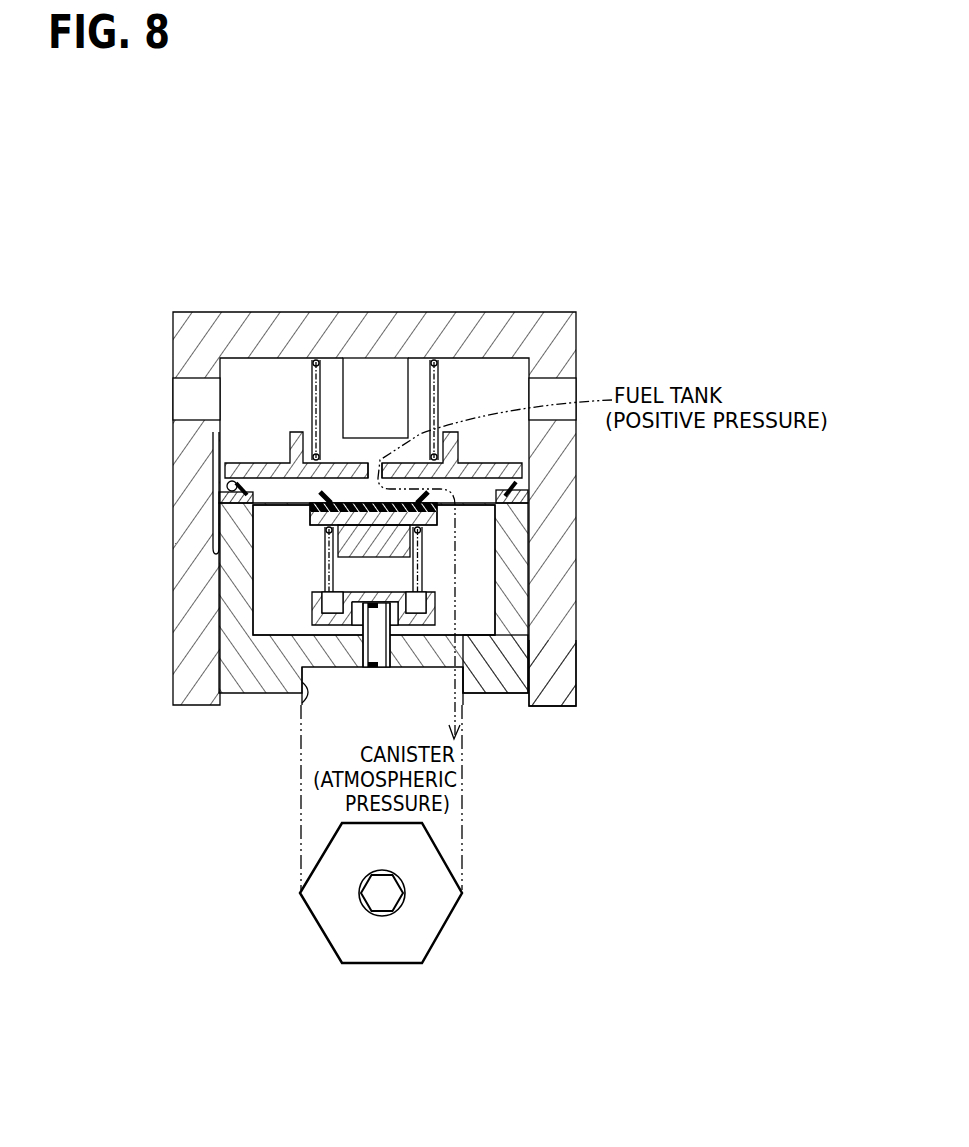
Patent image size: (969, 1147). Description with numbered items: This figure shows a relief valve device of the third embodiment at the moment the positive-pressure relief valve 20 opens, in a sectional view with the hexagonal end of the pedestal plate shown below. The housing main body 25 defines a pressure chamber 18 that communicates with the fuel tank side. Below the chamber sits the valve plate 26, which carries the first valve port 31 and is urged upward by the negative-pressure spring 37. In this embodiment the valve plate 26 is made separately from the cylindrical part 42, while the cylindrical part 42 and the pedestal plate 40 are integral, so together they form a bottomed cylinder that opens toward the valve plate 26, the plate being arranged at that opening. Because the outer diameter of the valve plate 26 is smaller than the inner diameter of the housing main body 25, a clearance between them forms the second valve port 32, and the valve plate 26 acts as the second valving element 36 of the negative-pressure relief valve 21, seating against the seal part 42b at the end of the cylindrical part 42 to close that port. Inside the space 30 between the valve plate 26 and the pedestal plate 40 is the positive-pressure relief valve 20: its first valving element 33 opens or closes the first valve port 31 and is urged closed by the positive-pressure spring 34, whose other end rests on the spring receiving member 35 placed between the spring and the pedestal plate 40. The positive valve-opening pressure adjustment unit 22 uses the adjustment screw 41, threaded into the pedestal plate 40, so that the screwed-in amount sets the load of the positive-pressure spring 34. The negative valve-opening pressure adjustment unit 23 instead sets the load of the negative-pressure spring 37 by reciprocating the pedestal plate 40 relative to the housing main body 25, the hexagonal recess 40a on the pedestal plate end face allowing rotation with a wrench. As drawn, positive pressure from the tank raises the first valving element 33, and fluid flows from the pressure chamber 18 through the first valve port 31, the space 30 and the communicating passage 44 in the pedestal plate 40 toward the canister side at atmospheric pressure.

The pressure chamber 18 is at (508, 372).
The positive-pressure relief valve 20 is at (276, 609).
The negative-pressure relief valve 21 is at (448, 390).
The positive valve-opening pressure adjustment unit 22 is at (371, 667).
The negative valve-opening pressure adjustment unit 23 is at (535, 683).
The housing main body 25 is at (331, 332).
The valve plate 26 is at (455, 456).
The space 30 is at (478, 593).
The first valve port 31 is at (378, 460).
The second valve port 32 is at (228, 484).
The first valving element 33 is at (316, 584).
The positive-pressure spring 34 is at (367, 537).
The spring receiving member 35 is at (417, 620).
The second valving element 36 is at (375, 470).
The negative-pressure spring 37 is at (308, 382).
The pedestal plate 40 is at (248, 682).
The hexagonal recess 40a is at (304, 706).
The adjustment screw 41 is at (372, 647).
The cylindrical part 42 is at (512, 548).
The seal part 42b is at (225, 498).
The communicating passage 44 is at (477, 660).